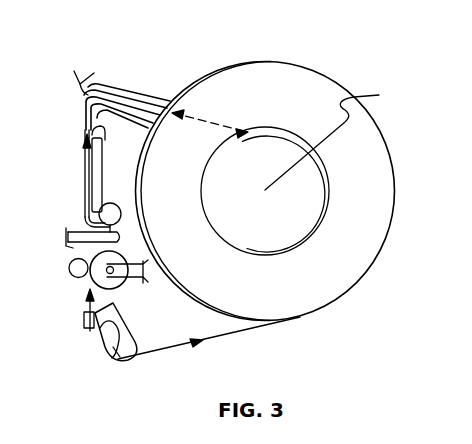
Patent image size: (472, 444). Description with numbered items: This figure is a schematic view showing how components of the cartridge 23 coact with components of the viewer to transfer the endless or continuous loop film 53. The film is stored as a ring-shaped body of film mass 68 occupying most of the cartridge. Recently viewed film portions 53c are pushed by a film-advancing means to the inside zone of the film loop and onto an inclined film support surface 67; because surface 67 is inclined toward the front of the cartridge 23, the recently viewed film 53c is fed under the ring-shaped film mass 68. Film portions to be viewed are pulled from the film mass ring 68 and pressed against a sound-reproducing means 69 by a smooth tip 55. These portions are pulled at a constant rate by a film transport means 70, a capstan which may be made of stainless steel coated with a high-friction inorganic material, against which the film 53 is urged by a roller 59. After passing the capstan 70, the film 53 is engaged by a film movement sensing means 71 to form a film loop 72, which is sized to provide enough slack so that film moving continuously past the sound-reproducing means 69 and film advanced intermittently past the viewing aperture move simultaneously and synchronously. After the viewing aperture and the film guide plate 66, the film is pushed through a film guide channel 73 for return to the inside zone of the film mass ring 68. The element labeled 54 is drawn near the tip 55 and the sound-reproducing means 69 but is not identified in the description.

The cartridge 23 is at (316, 65).
The ring-shaped body of the film mass 68 is at (379, 174).
The inclined film support surface 67 is at (291, 137).
The recently viewed film portions 53c is at (312, 219).
The endless or continuous loop film 53 is at (219, 337).
The film guide channel 73 is at (147, 89).
The film guide plate 66 is at (92, 166).
The film loop 72 is at (88, 199).
The film movement sensing means 71 is at (83, 221).
The film transport means 70 is at (69, 268).
The roller 59 is at (90, 290).
The sound-reproducing means 69 is at (84, 323).
The smooth tip 55 is at (92, 326).
The roller 54 is at (120, 358).